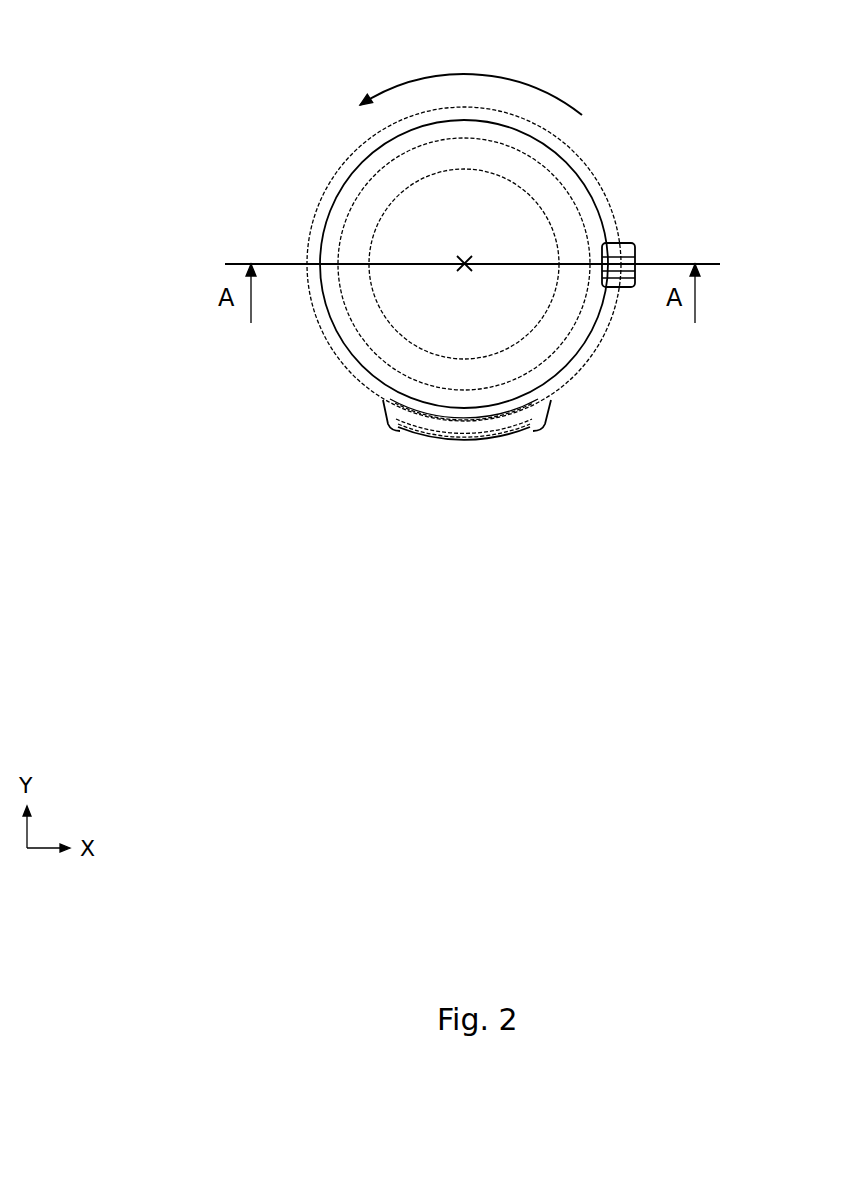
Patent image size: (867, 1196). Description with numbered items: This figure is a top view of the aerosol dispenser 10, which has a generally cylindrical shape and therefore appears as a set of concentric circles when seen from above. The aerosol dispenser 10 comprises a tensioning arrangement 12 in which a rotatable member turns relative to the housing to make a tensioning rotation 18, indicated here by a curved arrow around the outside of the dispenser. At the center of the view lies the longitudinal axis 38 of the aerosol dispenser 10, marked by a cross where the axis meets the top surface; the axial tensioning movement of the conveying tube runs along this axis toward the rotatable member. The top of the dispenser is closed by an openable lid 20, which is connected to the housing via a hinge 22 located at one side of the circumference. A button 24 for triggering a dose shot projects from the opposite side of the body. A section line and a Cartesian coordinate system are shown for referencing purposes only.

The aerosol dispenser 10 is at (256, 70).
The tensioning arrangement 12 is at (268, 158).
The tensioning rotation 18 is at (471, 75).
The openable lid 20 is at (481, 225).
The hinge 22 is at (618, 250).
The button 24 is at (470, 436).
The longitudinal axis 38 is at (466, 268).